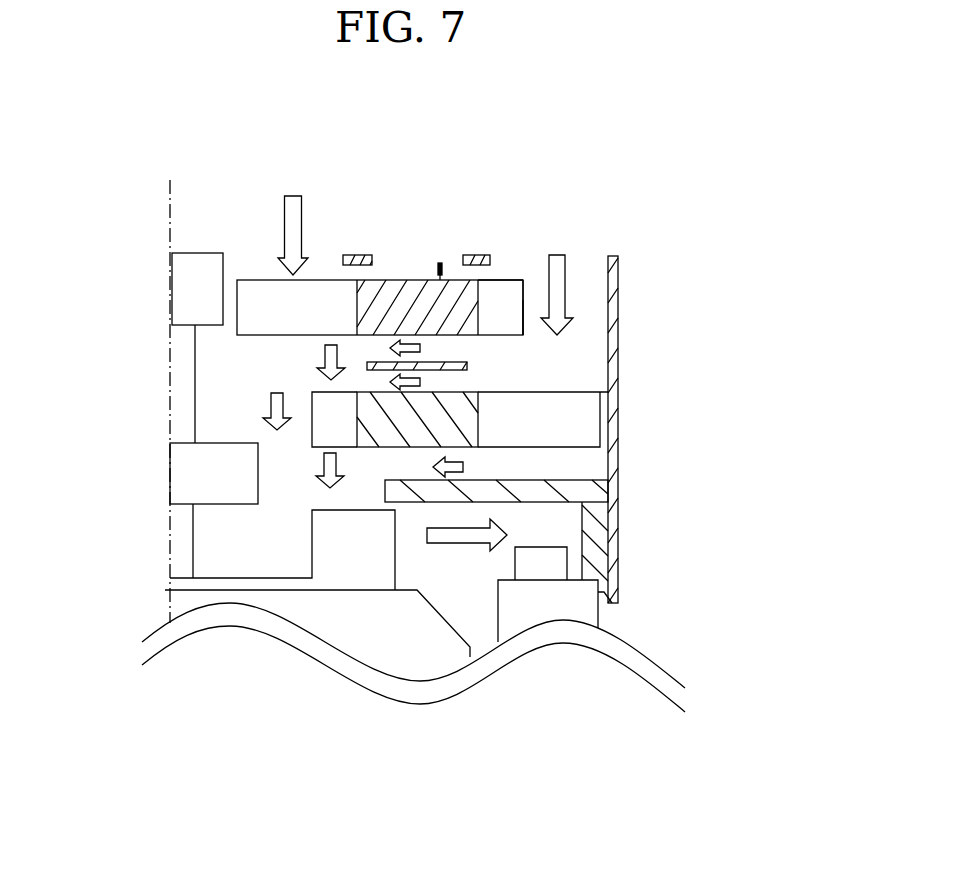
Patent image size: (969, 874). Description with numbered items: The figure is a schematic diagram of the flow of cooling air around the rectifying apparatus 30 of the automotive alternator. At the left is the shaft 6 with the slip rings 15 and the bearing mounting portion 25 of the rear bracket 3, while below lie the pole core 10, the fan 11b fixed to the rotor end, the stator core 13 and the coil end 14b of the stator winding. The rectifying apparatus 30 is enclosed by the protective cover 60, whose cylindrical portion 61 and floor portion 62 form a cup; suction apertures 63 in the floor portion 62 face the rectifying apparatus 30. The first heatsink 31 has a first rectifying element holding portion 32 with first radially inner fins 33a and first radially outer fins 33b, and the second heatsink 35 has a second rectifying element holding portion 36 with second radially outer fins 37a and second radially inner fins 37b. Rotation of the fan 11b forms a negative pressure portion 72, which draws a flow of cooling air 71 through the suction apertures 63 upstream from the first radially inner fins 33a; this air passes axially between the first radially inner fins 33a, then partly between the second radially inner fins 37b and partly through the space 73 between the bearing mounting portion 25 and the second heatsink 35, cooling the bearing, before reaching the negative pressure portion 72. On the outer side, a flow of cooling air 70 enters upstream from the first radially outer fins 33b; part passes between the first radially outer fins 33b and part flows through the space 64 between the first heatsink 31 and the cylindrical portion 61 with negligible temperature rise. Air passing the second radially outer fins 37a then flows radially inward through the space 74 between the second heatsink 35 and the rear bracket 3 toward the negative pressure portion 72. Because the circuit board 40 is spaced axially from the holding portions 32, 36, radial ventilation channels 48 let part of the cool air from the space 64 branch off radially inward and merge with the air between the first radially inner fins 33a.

The rear bracket 3 is at (607, 503).
The shaft 6 is at (180, 522).
The pole core 10 is at (378, 650).
The fan 11b is at (347, 562).
The stator core 13 is at (588, 608).
The coil end 14b is at (555, 567).
The slip ring 15 is at (183, 342).
The bearing mounting portion 25 is at (192, 470).
The rectifying apparatus 30 is at (423, 222).
The first heatsink 31 is at (440, 263).
The first rectifying element holding portion 32 is at (418, 280).
The first radially inner fin 33a is at (333, 290).
The first radially outer fin 33b is at (500, 292).
The second heatsink 35 is at (421, 401).
The second rectifying element holding portion 36 is at (467, 407).
The second radially outer fin 37a is at (582, 425).
The second radially inner fin 37b is at (327, 397).
The circuit board 40 is at (368, 360).
The radial ventilation channel 48 is at (395, 297).
The protective cover 60 is at (670, 410).
The cylindrical portion 61 is at (620, 290).
The floor portion 62 is at (478, 258).
The suction aperture 63 is at (532, 265).
The space 64 is at (585, 318).
The cooling air flow 70 is at (555, 255).
The cooling air flow 71 is at (290, 200).
The negative pressure portion 72 is at (255, 555).
The space 73 is at (278, 450).
The space 74 is at (493, 463).